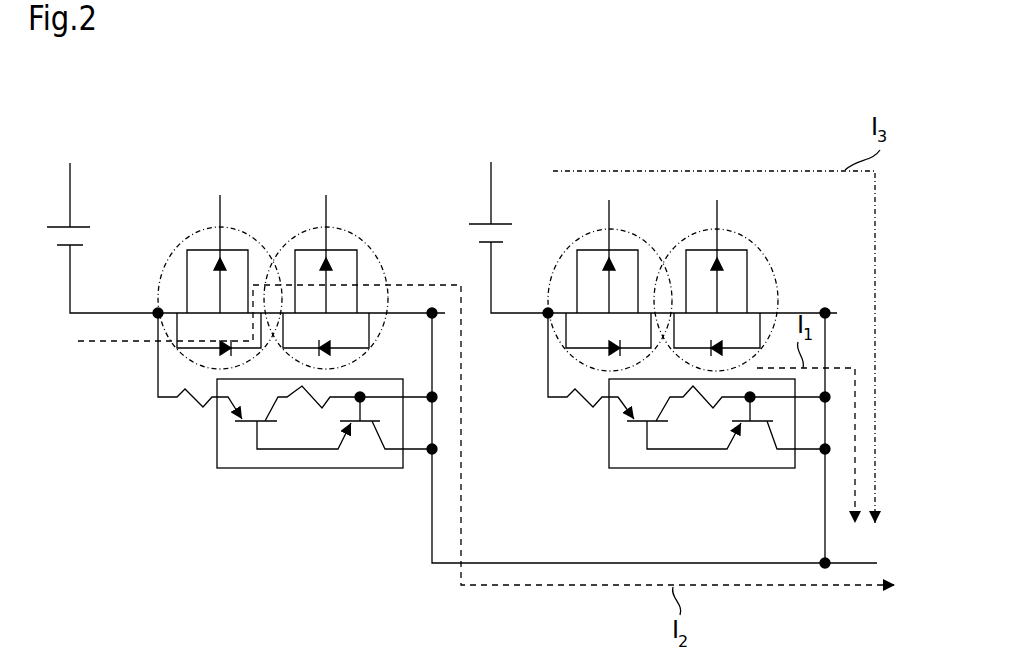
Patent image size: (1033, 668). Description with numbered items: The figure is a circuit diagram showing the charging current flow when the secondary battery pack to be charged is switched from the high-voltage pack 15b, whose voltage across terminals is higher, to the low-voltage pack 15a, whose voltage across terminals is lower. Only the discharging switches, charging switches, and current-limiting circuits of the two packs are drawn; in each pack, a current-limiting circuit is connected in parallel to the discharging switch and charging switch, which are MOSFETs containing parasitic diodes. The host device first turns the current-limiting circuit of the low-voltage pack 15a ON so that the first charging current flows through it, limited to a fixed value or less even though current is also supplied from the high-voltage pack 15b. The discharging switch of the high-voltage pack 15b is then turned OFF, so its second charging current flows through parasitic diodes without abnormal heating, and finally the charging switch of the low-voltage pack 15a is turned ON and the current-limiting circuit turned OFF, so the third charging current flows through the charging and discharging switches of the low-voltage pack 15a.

The high-voltage pack 15b is at (246, 226).
The low-voltage pack 15a is at (663, 253).